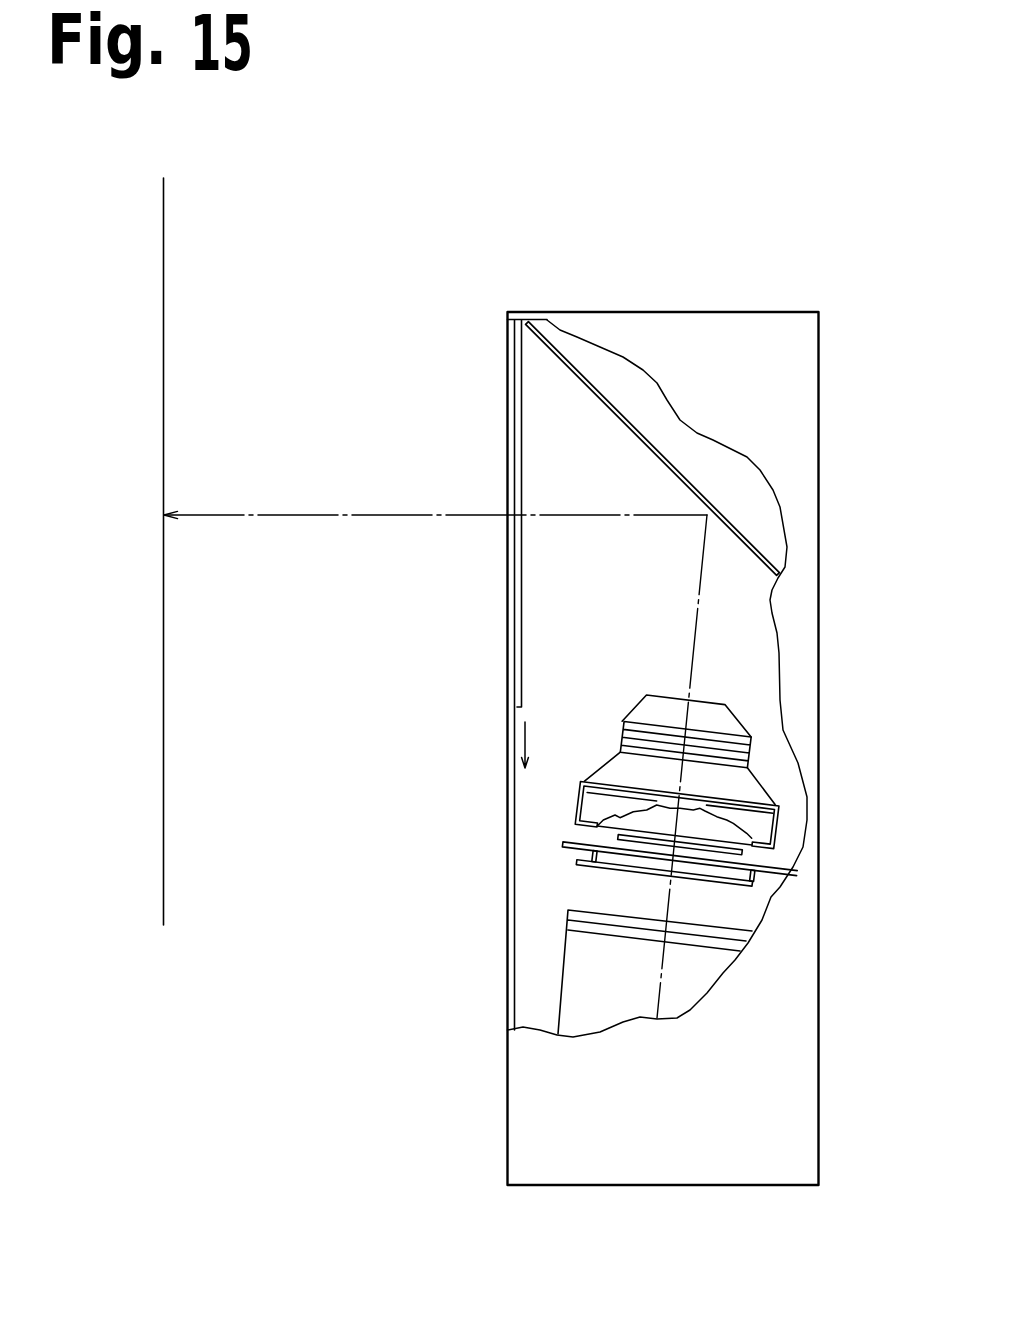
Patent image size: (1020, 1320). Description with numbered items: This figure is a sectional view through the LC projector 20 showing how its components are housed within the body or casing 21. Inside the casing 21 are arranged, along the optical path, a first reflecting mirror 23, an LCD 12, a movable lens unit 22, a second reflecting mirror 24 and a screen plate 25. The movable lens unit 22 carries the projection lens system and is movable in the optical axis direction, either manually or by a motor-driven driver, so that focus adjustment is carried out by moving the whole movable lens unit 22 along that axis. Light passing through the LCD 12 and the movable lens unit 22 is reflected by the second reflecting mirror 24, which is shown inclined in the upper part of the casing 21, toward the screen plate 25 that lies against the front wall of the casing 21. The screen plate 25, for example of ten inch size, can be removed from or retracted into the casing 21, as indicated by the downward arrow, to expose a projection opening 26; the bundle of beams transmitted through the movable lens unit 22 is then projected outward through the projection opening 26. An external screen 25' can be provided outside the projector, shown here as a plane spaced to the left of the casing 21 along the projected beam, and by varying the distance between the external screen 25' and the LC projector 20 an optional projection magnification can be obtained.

The LC projector 20 is at (807, 270).
The body (casing) 21 is at (508, 827).
The movable lens unit 22 is at (763, 775).
The first reflecting mirror 23 is at (570, 982).
The second reflecting mirror 24 is at (619, 414).
The screen plate 25 is at (489, 513).
The external screen 25' is at (436, 598).
The projection opening 26 is at (514, 730).
The LCD 12 is at (745, 867).